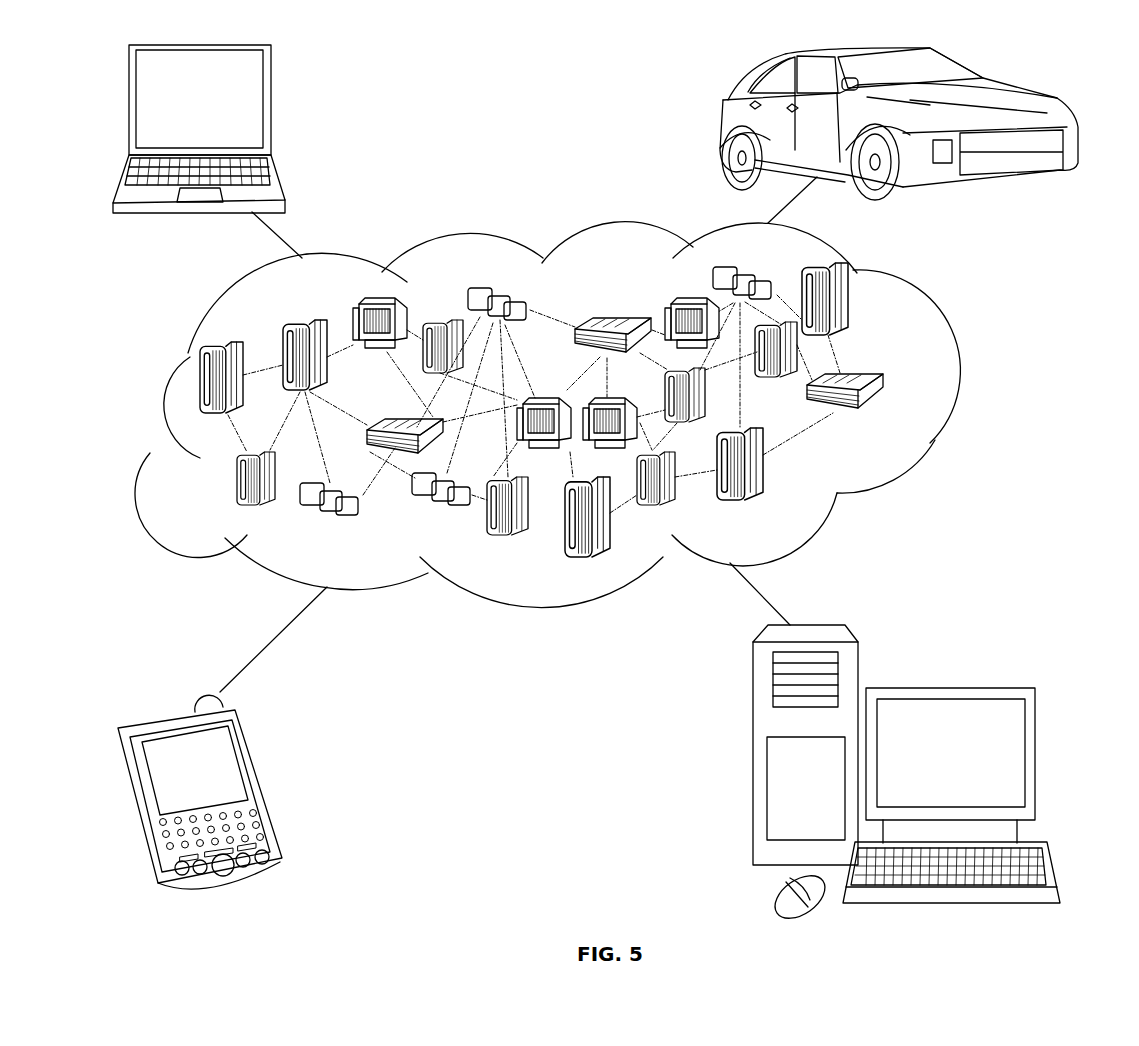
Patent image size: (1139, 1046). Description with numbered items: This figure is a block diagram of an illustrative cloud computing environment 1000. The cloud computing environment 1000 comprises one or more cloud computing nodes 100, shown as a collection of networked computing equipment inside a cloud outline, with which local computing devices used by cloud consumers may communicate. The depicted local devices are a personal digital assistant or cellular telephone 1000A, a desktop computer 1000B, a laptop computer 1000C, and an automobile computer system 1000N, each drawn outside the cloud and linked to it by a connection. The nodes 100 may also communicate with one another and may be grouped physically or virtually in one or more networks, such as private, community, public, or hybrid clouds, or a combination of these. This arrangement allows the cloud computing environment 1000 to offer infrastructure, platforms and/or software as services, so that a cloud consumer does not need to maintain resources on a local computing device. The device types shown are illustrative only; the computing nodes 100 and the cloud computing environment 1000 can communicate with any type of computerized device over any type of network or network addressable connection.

The laptop computer 1000C is at (272, 108).
The automobile computer system 1000N is at (722, 125).
The cloud computing environment 1000 is at (583, 415).
The cloud computing nodes 100 is at (888, 417).
The personal digital assistant (PDA) or cellular telephone 1000A is at (262, 783).
The desktop computer 1000B is at (960, 662).